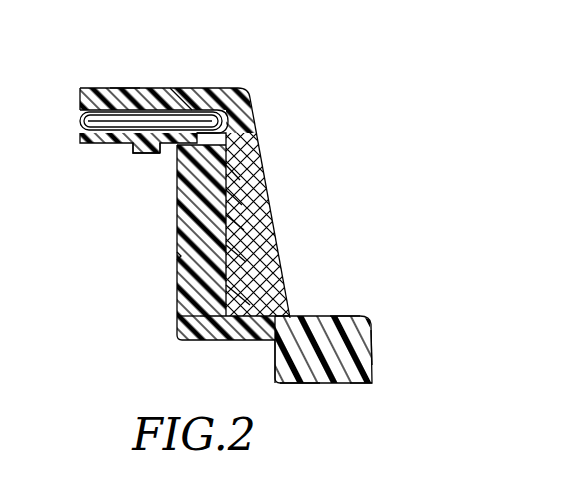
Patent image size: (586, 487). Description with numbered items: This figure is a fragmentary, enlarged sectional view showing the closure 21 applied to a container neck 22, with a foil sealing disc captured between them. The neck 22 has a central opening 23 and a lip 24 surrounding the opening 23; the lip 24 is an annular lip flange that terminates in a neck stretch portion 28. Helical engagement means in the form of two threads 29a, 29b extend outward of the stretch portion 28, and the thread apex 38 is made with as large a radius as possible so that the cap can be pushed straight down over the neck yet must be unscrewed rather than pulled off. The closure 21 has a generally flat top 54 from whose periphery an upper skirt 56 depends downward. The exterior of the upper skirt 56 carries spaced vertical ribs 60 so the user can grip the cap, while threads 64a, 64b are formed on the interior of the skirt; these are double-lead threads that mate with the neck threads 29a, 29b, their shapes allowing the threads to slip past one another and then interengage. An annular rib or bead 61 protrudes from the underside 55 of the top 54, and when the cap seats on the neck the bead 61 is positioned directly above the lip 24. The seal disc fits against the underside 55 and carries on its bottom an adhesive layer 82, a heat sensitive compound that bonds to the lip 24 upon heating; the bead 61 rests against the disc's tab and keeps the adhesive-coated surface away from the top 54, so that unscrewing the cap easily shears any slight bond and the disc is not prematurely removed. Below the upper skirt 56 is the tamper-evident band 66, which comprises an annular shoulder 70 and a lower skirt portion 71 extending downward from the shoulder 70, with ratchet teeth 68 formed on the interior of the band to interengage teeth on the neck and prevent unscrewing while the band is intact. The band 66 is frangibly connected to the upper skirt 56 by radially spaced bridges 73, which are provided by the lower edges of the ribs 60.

The closure 21 is at (149, 86).
The container neck 22 is at (170, 334).
The central opening 23 is at (124, 146).
The lip 24 is at (160, 155).
The neck stretch portion 28 is at (181, 256).
The thread 29a is at (235, 172).
The thread 29b is at (233, 252).
The thread apex 38 is at (237, 197).
The top 54 is at (123, 88).
The underside 55 is at (78, 142).
The upper skirt 56 is at (238, 148).
The vertical ribs 60 is at (270, 298).
The annular rib or bead 61 is at (180, 97).
The thread 64a is at (233, 222).
The thread 64b is at (230, 293).
The tamper-evident band 66 is at (376, 317).
The ratchet teeth 68 is at (362, 368).
The annular shoulder 70 is at (345, 316).
The lower skirt portion 71 is at (362, 346).
The bridges 73 is at (296, 383).
The adhesive layer 82 is at (255, 112).